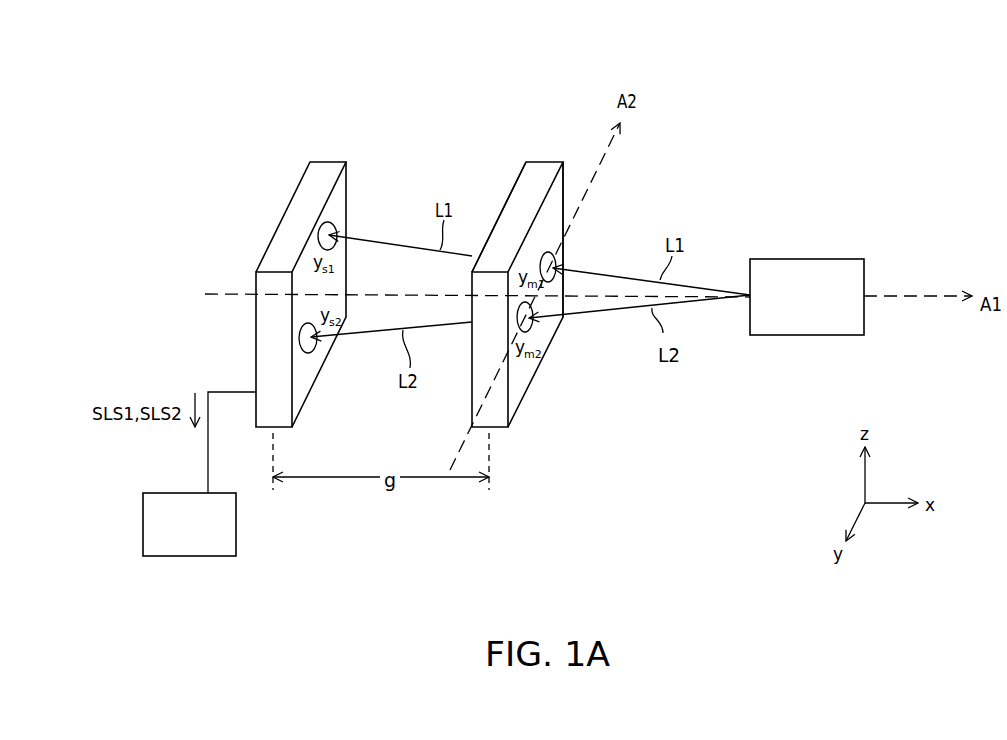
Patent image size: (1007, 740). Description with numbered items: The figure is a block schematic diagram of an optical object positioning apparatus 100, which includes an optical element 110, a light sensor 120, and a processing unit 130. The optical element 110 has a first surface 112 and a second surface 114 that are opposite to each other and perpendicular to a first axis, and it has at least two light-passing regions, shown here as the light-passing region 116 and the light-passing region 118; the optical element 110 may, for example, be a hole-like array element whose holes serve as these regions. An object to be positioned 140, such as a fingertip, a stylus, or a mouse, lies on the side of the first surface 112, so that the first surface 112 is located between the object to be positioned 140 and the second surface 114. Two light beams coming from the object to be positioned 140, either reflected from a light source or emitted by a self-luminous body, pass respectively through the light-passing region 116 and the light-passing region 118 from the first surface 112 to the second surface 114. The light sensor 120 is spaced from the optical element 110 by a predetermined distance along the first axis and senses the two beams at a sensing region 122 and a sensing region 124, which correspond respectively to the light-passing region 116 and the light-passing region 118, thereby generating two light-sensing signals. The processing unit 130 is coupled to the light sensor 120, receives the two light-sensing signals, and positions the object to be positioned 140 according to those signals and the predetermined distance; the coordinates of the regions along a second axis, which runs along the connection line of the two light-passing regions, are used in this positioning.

The optical object positioning apparatus 100 is at (500, 525).
The optical element 110 is at (540, 162).
The first surface 112 is at (558, 193).
The second surface 114 is at (520, 177).
The light-passing region 116 is at (560, 260).
The light-passing region 118 is at (530, 330).
The light sensor 120 is at (330, 162).
The sensing region 122 is at (335, 223).
The sensing region 124 is at (312, 353).
The processing unit 130 is at (236, 522).
The object to be positioned 140 is at (787, 259).